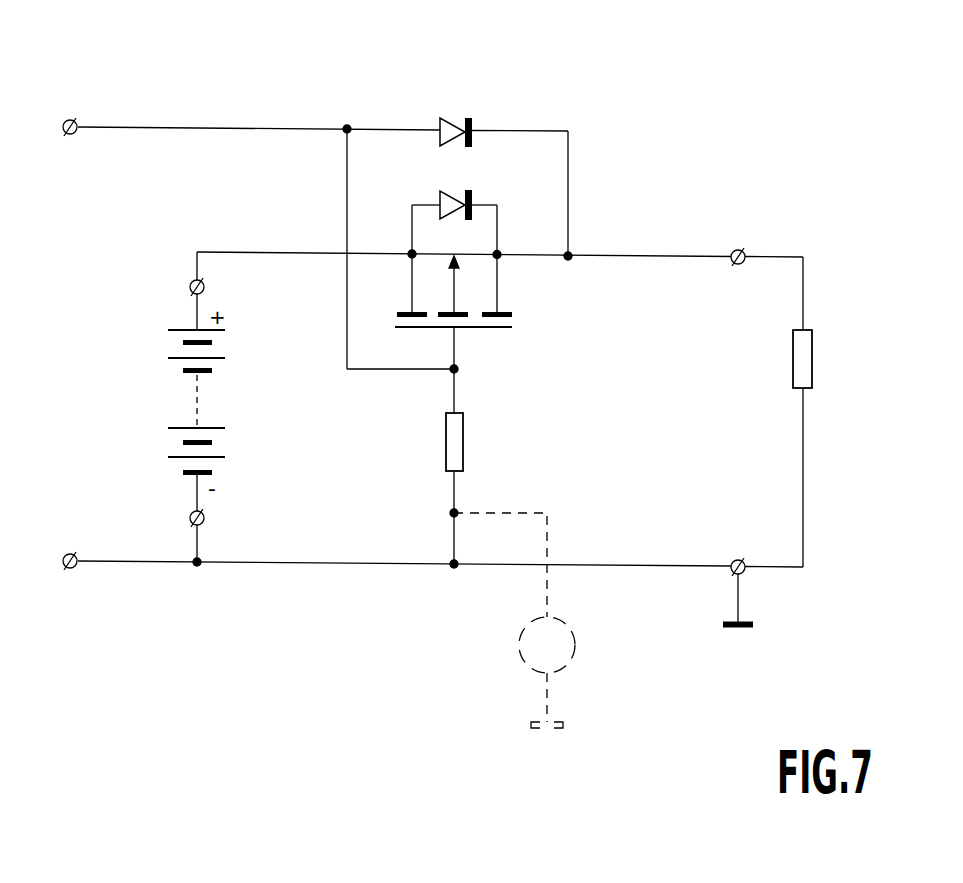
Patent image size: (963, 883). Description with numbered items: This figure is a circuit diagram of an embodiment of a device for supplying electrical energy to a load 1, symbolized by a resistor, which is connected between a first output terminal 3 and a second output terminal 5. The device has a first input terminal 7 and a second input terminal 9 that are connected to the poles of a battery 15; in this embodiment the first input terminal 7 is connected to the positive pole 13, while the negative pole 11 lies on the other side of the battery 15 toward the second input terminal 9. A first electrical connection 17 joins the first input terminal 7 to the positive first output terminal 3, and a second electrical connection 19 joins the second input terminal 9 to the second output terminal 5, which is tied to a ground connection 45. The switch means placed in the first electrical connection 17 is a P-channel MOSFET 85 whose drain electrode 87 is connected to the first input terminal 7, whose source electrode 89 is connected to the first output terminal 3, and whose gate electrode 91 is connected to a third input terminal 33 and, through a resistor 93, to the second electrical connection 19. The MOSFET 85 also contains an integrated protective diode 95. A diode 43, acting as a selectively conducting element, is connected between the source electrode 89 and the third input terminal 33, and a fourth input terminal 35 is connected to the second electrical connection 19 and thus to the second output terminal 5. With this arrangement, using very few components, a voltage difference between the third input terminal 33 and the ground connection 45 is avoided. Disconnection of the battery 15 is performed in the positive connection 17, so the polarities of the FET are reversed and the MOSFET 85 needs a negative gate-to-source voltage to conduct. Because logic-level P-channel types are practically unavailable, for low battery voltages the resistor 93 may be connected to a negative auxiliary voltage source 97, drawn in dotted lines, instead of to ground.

The load 1 is at (812, 357).
The first output terminal 3 is at (738, 250).
The second output terminal 5 is at (738, 560).
The first input terminal 7 is at (205, 287).
The second input terminal 9 is at (205, 518).
The negative pole 11 is at (183, 473).
The positive pole 13 is at (168, 330).
The battery 15 is at (180, 398).
The first electrical connection 17 is at (248, 252).
The second electrical connection 19 is at (287, 563).
The third input terminal 33 is at (70, 119).
The fourth input terminal 35 is at (72, 569).
The diode 43 is at (463, 118).
The ground connection 45 is at (753, 623).
The P-channel MOSFET 85 is at (469, 272).
The drain electrode 87 is at (397, 312).
The source electrode 89 is at (515, 315).
The gate electrode 91 is at (498, 332).
The resistor 93 is at (446, 436).
The integrated protective diode 95 is at (439, 184).
The negative auxiliary voltage source 97 is at (575, 645).